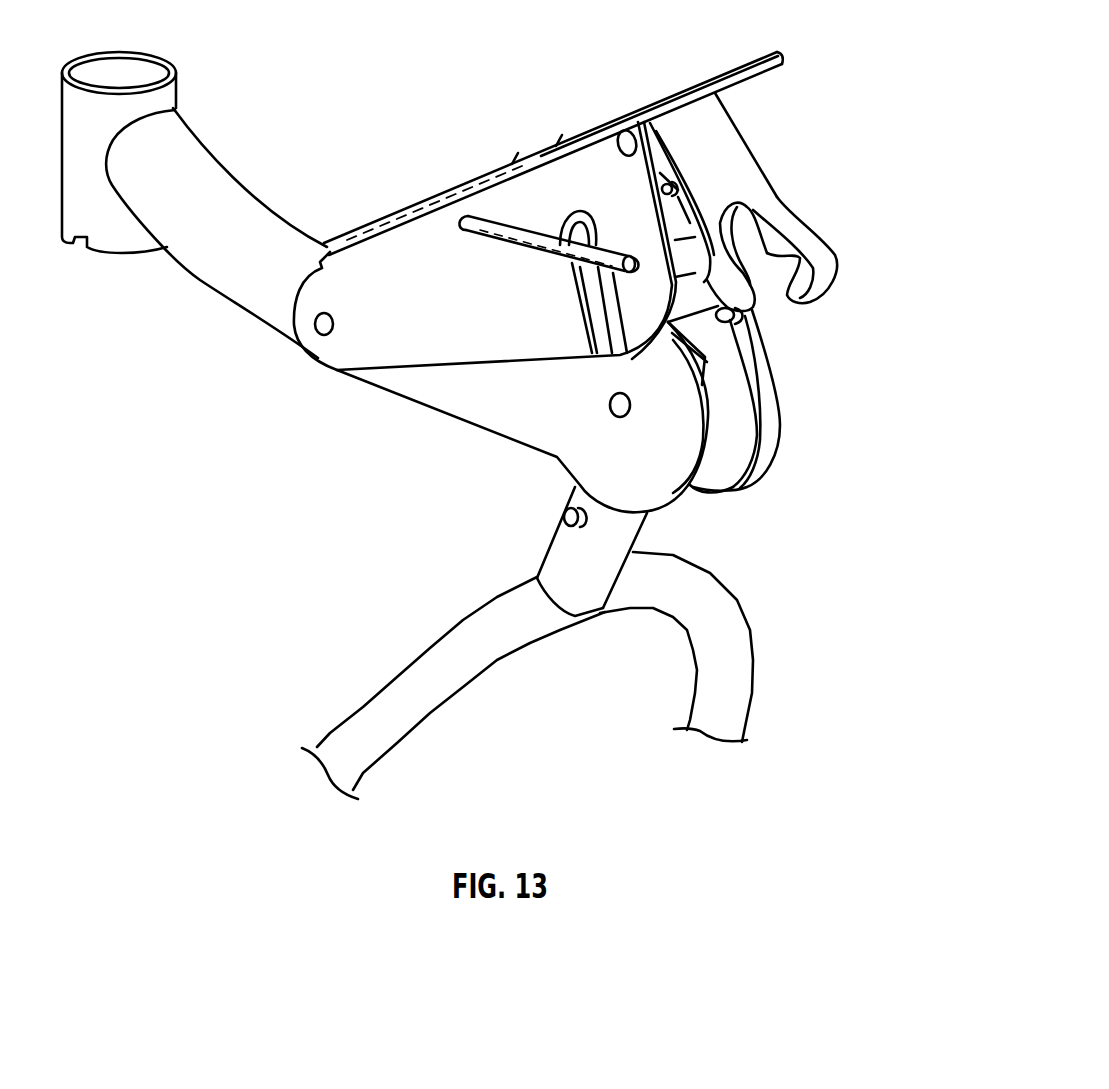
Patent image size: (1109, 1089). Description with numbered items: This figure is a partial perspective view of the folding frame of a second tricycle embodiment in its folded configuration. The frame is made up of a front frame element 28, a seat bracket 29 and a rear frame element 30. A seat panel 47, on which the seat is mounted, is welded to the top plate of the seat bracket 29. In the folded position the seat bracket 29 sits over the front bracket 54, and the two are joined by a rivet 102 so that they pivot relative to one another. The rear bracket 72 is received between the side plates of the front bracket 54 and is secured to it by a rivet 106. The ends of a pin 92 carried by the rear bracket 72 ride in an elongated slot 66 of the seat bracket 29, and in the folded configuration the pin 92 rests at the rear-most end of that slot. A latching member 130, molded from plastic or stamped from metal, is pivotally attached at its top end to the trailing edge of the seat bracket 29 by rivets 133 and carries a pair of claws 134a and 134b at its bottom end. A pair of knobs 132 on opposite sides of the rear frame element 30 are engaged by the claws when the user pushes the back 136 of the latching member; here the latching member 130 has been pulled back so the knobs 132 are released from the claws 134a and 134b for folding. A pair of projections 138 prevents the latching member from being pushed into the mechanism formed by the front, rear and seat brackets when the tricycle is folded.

The front frame element 28 is at (233, 195).
The seat bracket 29 is at (420, 234).
The rear frame element 30 is at (557, 566).
The seat panel 47 is at (772, 58).
The front bracket 54 is at (440, 418).
The elongated slot 66 is at (490, 226).
The rear bracket 72 is at (733, 474).
The pin 92 is at (624, 256).
The rivet 102 is at (315, 324).
The rivet 106 is at (611, 407).
The latching member 130 is at (796, 215).
The knob 132 is at (563, 520).
The rivet 133 is at (614, 136).
The claw 134a is at (748, 298).
The claw 134b is at (833, 262).
The back of the latching member 136 is at (733, 135).
The projection 138 is at (673, 184).